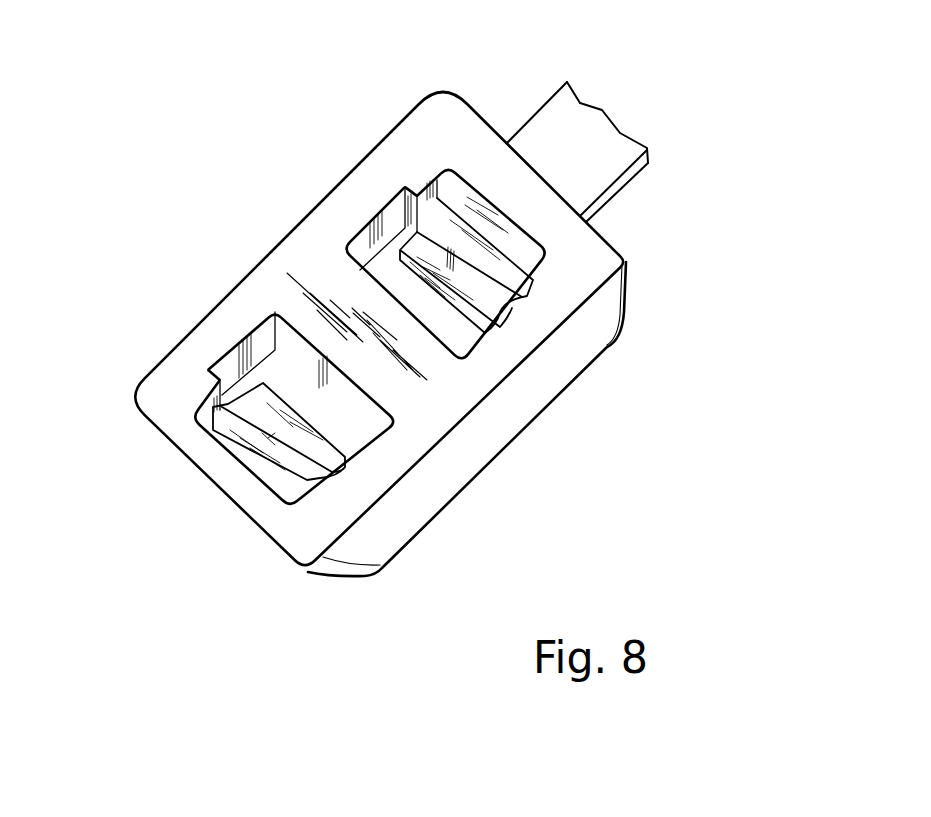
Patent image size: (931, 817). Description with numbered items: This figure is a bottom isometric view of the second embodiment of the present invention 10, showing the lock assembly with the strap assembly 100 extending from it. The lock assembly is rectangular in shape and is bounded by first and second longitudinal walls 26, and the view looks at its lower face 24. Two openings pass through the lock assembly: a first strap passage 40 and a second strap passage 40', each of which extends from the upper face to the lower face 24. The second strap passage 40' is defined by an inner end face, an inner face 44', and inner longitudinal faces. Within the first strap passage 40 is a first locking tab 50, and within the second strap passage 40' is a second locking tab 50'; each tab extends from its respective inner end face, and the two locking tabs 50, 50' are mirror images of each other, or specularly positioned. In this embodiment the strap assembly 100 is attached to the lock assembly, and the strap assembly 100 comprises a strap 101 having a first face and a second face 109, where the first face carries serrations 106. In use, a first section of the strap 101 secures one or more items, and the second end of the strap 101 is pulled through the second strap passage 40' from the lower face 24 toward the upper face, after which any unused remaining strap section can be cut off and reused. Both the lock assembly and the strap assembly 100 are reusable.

The present invention 10 is at (106, 196).
The lower face 24 is at (455, 383).
The first and second longitudinal walls 26 is at (470, 442).
The first strap passage 40 is at (426, 240).
The second strap passage 40' is at (294, 356).
The inner face 44' is at (244, 341).
The first locking tab 50 is at (554, 267).
The second locking tab 50' is at (210, 380).
The strap assembly 100 is at (644, 190).
The strap 101 is at (530, 124).
The second face 109 is at (570, 125).
The serrations 106 is at (13, 19).